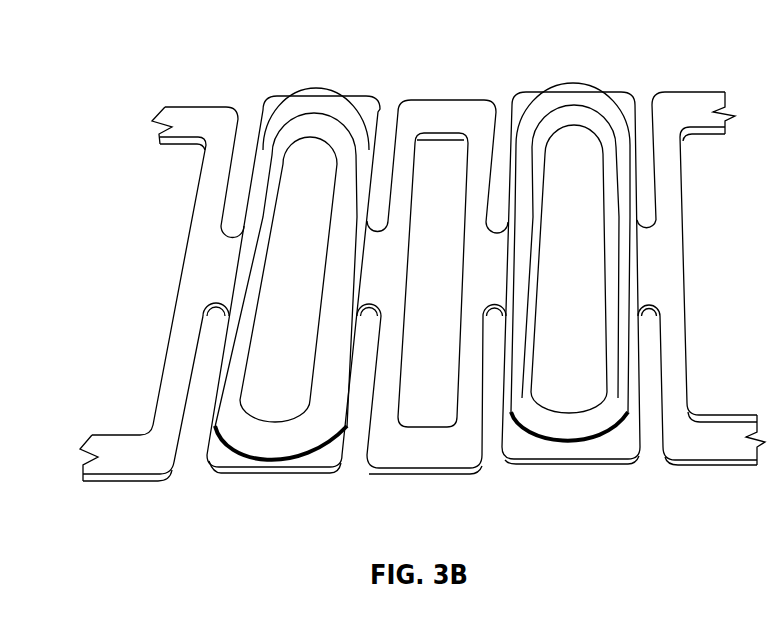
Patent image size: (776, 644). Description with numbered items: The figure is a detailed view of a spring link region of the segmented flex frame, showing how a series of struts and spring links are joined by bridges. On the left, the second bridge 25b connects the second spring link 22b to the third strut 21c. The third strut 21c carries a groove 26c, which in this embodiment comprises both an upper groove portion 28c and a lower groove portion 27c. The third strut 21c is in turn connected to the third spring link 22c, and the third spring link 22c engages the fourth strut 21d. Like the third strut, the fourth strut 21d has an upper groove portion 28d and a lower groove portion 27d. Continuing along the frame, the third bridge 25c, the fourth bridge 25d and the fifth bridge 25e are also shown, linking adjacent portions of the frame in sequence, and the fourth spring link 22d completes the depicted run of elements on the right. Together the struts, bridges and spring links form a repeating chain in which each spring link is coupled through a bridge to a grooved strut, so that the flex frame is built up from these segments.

The second spring link 22b is at (191, 120).
The third spring link 22c is at (412, 445).
The fourth spring link 22d is at (683, 110).
The second bridge 25b is at (205, 280).
The third bridge 25c is at (373, 255).
The fourth bridge 25d is at (481, 252).
The fifth bridge 25e is at (672, 250).
The groove 26c is at (333, 84).
The upper groove portion 28c is at (298, 83).
The upper groove portion 28d is at (602, 82).
The third strut 21c is at (298, 425).
The fourth strut 21d is at (556, 427).
The lower groove portion 27c is at (263, 462).
The lower groove portion 27d is at (603, 452).